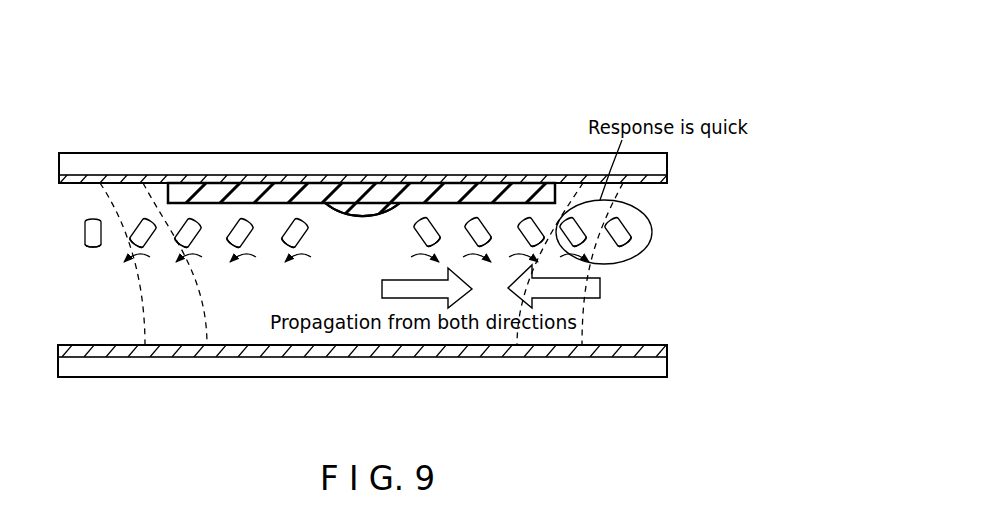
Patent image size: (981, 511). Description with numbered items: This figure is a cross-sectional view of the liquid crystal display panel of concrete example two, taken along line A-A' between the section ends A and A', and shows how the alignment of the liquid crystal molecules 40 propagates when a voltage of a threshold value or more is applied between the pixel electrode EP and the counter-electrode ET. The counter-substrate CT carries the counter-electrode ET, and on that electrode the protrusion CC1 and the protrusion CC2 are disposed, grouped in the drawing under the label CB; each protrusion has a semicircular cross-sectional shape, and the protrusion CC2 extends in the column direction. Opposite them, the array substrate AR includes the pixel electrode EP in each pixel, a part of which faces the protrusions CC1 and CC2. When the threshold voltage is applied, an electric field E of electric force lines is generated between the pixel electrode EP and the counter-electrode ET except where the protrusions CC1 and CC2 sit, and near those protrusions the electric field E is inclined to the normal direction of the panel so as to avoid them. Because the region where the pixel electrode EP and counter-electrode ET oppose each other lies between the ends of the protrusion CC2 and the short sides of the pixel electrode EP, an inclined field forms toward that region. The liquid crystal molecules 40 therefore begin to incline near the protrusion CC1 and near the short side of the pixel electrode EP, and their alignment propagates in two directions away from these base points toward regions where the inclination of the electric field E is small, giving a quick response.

The liquid crystal molecules 40 is at (84, 233).
The counter-substrate CT is at (521, 150).
The counter-electrode ET is at (443, 175).
The column spacer / bank structure CB is at (222, 123).
The protrusion CC1 is at (362, 207).
The protrusion CC2 is at (235, 192).
The electric field E is at (136, 288).
The pixel electrode EP is at (393, 353).
The array substrate AR is at (288, 380).
The line A-A' A is at (47, 388).
The line A- A' is at (677, 388).